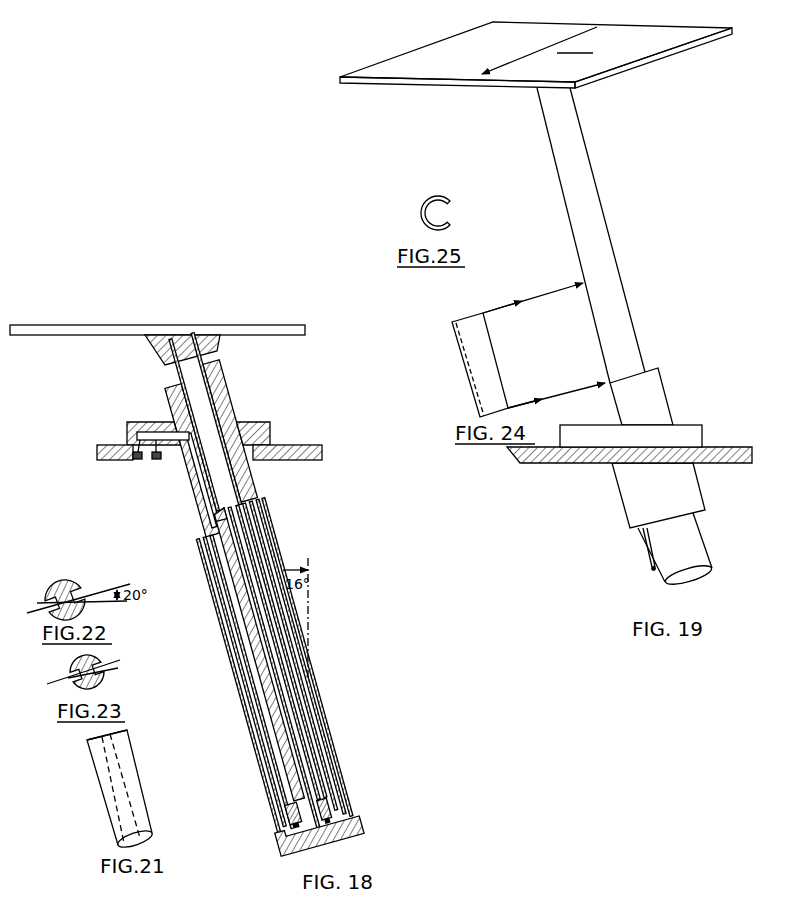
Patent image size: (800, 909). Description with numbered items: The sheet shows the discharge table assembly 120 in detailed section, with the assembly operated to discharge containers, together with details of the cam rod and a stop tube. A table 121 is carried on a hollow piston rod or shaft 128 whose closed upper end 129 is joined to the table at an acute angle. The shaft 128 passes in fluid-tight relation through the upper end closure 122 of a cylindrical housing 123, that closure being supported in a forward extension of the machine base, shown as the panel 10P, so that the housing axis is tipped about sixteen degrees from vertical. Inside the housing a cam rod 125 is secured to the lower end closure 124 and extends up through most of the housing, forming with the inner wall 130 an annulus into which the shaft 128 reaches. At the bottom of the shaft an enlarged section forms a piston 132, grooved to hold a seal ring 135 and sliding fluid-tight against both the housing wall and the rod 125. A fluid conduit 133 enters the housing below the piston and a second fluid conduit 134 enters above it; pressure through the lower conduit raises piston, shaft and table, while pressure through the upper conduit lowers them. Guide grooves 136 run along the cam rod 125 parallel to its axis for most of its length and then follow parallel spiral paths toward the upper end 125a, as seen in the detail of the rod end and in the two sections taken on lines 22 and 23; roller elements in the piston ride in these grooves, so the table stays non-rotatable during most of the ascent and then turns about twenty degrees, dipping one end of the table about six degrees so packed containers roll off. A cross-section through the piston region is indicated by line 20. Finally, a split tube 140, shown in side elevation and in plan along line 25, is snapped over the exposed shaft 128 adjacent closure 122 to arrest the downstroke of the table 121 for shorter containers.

In FIG. 18, the table 121 is at (222, 325).
In FIG. 19, the table 121 is at (666, 27).
In FIG. 18, the upper end of shaft 129 is at (213, 347).
In FIG. 18, the hollow piston rod 128 is at (268, 553).
In FIG. 19, the hollow piston rod 128 is at (605, 213).
In FIG. 18, the upper end closure 122 is at (261, 503).
In FIG. 19, the upper end closure 122 is at (684, 431).
In FIG. 18, the panel / deck 10P is at (100, 461).
In FIG. 19, the panel / deck 10P is at (728, 454).
In FIG. 18, the fluid conduit 134 is at (136, 460).
In FIG. 18, the fluid conduit 133 is at (156, 461).
In FIG. 19, the fluid conduit 133 is at (648, 557).
In FIG. 18, the cylindrical housing 123 is at (295, 612).
In FIG. 19, the cylindrical housing 123 is at (708, 549).
In FIG. 18, the inner wall of housing 130 is at (258, 530).
In FIG. 18, the cam rod 125 is at (270, 638).
In FIG. 22, the cam rod 125 is at (63, 581).
In FIG. 21, the cam rod 125 is at (150, 818).
In FIG. 18, the upper end of rod 125a is at (252, 512).
In FIG. 21, the upper end of rod 125a is at (118, 733).
In FIG. 18, the discharge table assembly 120 is at (266, 592).
In FIG. 18, the piston 132 is at (314, 790).
In FIG. 18, the seal ring 135 is at (332, 793).
In FIG. 18, the lower end closure 124 is at (357, 825).
In FIG. 18, the section line 20 is at (275, 822).
In FIG. 22, the guide grooves 136 is at (54, 590).
In FIG. 23, the guide grooves 136 is at (94, 665).
In FIG. 24, the split tube 140 is at (468, 389).
In FIG. 24, the section line 25 is at (433, 307).
In FIG. 21, the section line 22 is at (83, 768).
In FIG. 21, the section line 23 is at (100, 815).